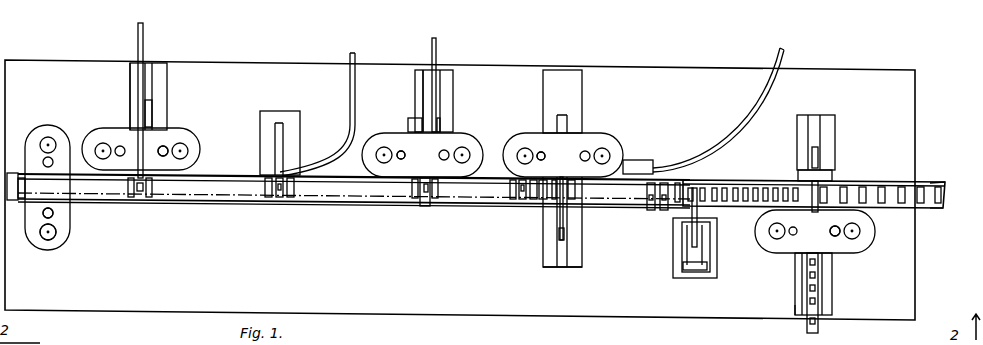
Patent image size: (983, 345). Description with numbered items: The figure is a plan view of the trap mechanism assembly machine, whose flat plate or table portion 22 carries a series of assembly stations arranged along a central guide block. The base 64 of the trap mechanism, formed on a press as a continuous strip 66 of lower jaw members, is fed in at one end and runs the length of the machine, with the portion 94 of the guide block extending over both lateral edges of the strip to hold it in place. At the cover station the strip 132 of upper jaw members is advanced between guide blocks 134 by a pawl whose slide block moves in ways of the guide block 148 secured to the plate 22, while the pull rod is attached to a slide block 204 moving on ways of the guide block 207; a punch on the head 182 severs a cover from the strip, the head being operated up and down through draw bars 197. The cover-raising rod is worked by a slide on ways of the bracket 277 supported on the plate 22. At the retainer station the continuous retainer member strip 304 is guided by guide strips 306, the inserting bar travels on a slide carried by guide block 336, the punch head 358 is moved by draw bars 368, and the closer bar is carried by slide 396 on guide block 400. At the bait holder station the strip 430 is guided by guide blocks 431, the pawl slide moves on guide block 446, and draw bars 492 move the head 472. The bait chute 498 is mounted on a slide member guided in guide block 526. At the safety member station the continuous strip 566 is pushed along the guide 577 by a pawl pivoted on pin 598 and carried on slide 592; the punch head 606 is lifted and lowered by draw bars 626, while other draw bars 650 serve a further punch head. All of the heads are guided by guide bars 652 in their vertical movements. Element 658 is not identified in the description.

The flat plate or table portion 22 is at (915, 312).
The portion of guide block 94 is at (905, 182).
The base of the trap mechanism 64 is at (930, 183).
The continuous strip 66 is at (930, 208).
The end plate 658 is at (70, 240).
The draw bars 650 is at (53, 214).
The guide bars 652 is at (48, 240).
The head 606 is at (195, 135).
The draw bars 626 is at (165, 145).
The pin 598 is at (168, 68).
The guide 577 is at (130, 67).
The slide 592 is at (155, 108).
The continuous strip 566 is at (144, 32).
The guide block 526 is at (300, 116).
The chute 498 is at (357, 56).
The guide block 446 is at (453, 75).
The strip 430 is at (436, 40).
The guide blocks 431 is at (423, 72).
The head 472 is at (478, 133).
The draw bars 492 is at (401, 150).
The guide block 336 is at (585, 75).
The guide block 400 is at (582, 267).
The slide 396 is at (559, 242).
The head 358 is at (607, 133).
The draw bars 368 is at (541, 152).
The guide strips 306 is at (645, 160).
The continuous retainer member strip 304 is at (780, 60).
The guide block 207 is at (830, 118).
The slide block 204 is at (808, 145).
The head 182 is at (875, 245).
The draw bars 197 is at (836, 237).
The guide blocks 134 is at (796, 284).
The strip 132 is at (818, 332).
The guide block 148 is at (795, 308).
The bracket 277 is at (712, 280).